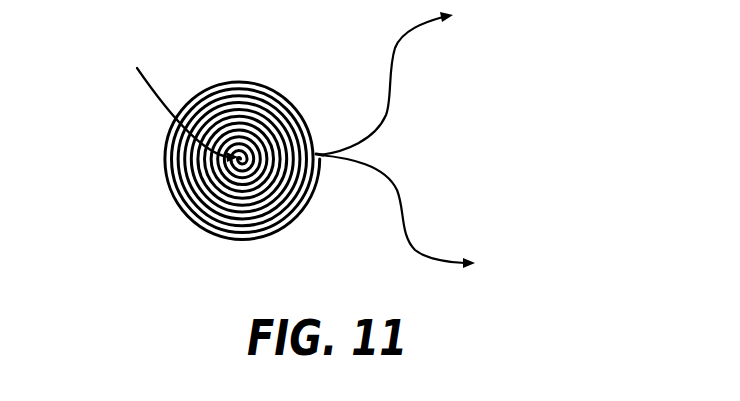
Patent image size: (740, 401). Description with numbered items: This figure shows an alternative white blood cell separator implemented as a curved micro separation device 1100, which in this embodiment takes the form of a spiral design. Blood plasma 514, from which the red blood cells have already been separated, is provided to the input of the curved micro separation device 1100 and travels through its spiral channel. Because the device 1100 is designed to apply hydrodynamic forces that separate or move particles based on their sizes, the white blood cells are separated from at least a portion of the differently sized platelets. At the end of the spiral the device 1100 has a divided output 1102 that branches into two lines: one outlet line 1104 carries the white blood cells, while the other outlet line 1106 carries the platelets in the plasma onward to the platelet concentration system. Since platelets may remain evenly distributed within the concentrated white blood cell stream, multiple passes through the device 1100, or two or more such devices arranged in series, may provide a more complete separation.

The blood plasma 514 is at (157, 96).
The curved micro separation device 1100 is at (245, 241).
The divided output 1102 is at (337, 86).
The outlet line 1104 is at (391, 82).
The outlet line 1106 is at (415, 247).